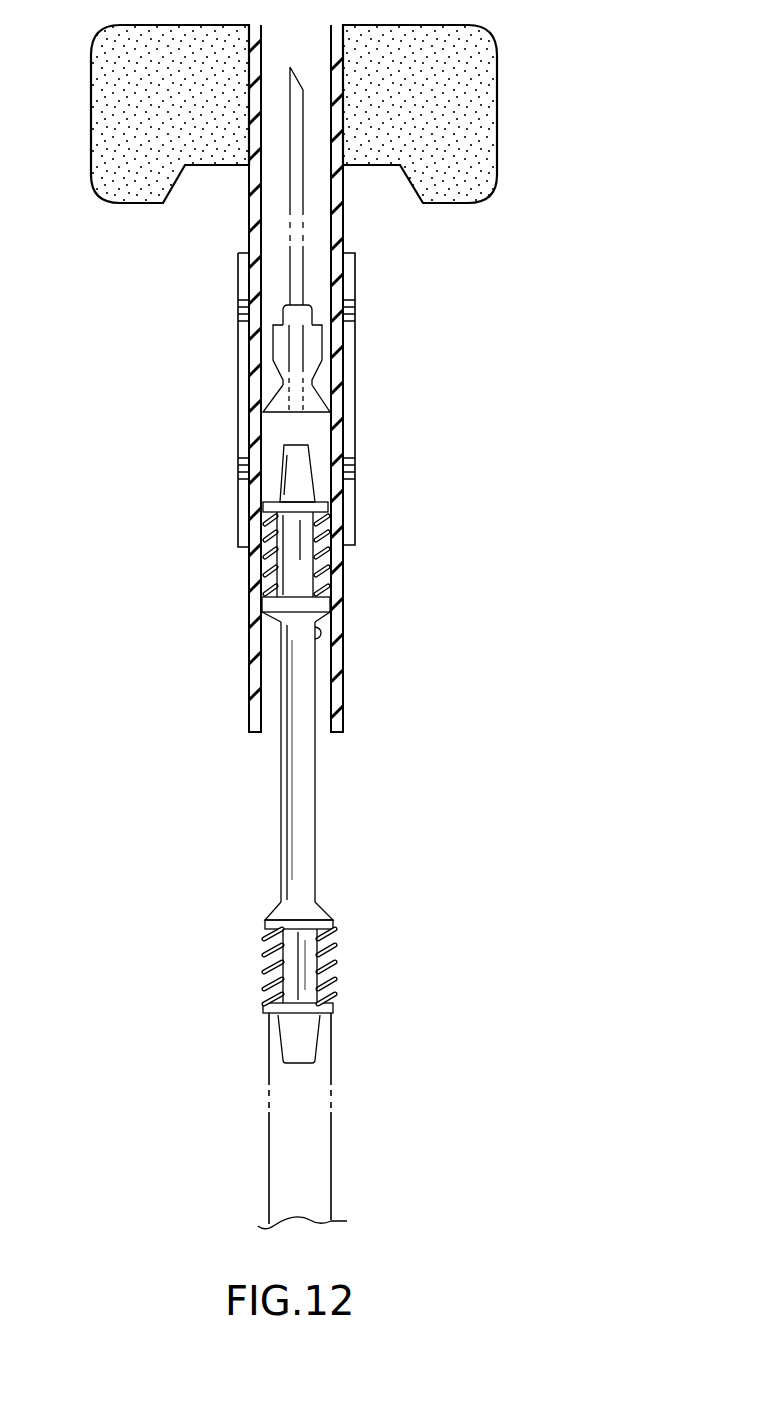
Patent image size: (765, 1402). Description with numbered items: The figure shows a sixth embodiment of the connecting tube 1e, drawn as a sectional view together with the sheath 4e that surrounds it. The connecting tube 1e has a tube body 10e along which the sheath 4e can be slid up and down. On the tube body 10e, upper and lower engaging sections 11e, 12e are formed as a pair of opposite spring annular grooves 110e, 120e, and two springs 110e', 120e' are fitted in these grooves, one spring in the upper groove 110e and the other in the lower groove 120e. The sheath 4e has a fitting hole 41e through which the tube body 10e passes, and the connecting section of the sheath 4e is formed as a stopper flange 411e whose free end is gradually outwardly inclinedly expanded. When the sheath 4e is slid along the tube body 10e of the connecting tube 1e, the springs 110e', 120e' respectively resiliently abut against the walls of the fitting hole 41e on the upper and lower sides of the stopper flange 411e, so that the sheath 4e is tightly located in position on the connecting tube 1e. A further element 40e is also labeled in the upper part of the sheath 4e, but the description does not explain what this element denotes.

The sheath 4e is at (370, 302).
The collet chuck 40e is at (334, 336).
The spring annular groove 110e is at (380, 543).
The spring 110e' is at (390, 554).
The upper engaging section 11e is at (419, 545).
The fitting hole 41e is at (338, 566).
The stopper flange 411e is at (321, 633).
The tube body 10e is at (293, 840).
The connecting tube 1e is at (362, 924).
The spring annular groove 120e is at (366, 965).
The spring 120e' is at (379, 968).
The lower engaging section 12e is at (407, 957).